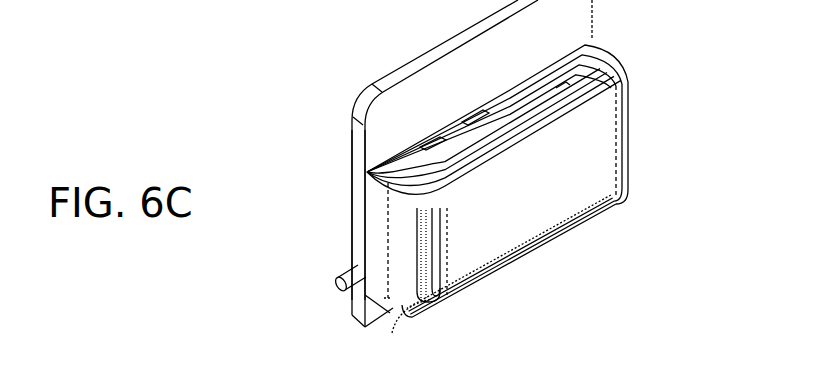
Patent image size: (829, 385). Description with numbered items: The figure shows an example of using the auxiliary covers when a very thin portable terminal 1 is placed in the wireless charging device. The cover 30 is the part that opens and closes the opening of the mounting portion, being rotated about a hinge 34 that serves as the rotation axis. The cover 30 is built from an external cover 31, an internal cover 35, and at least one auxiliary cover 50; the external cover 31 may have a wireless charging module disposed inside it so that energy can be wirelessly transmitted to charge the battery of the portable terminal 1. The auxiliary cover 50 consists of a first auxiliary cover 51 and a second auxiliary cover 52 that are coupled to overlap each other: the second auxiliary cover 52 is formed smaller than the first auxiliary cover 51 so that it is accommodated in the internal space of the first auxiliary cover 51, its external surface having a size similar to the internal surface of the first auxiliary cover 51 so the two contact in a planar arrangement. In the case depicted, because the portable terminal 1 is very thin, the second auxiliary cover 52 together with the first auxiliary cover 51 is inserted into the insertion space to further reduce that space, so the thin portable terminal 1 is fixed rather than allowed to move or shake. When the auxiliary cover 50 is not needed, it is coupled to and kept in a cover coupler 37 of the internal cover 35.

The portable terminal 1 is at (565, 181).
The cover 30 is at (604, 2).
The external cover 31 is at (360, 143).
The hinge 34 is at (335, 283).
The internal cover 35 is at (372, 230).
The cover coupler 37 is at (400, 306).
The auxiliary cover 50 is at (565, 181).
The first auxiliary cover 51 is at (705, 70).
The second auxiliary cover 52 is at (632, 80).